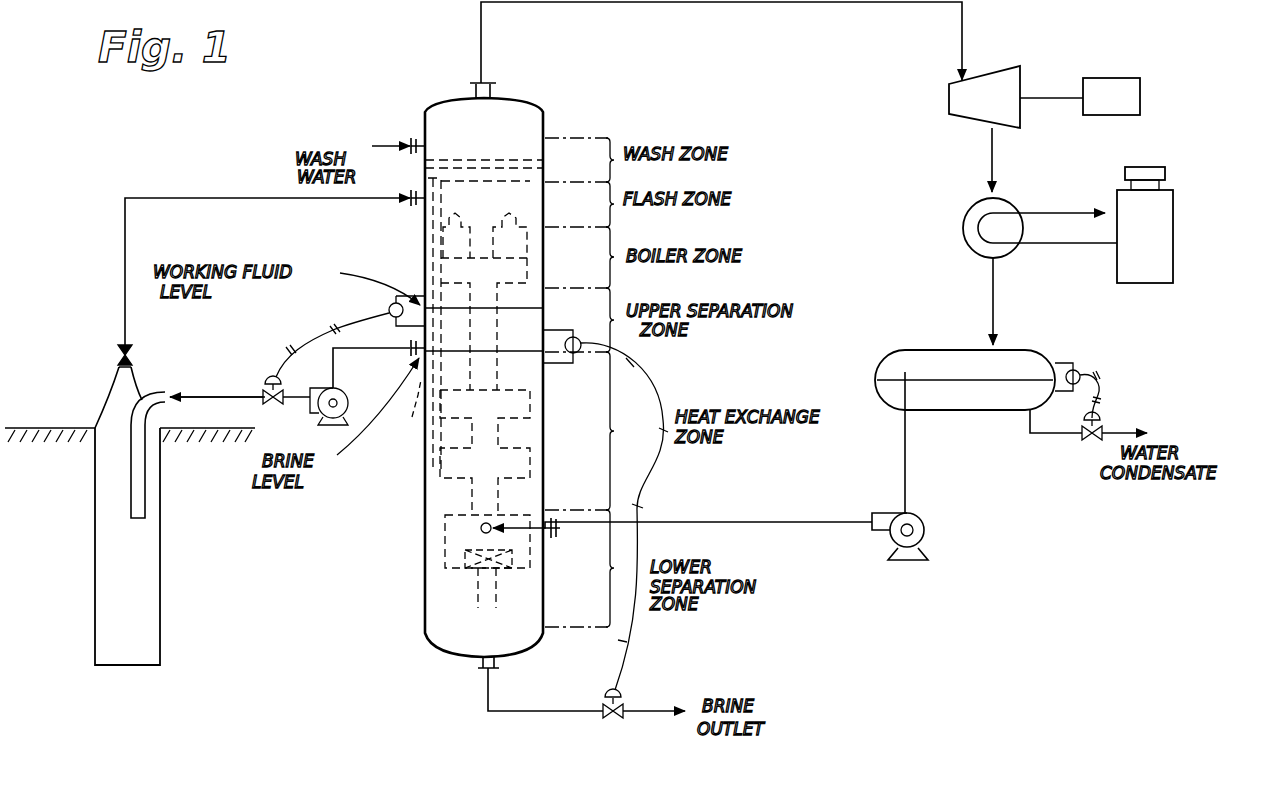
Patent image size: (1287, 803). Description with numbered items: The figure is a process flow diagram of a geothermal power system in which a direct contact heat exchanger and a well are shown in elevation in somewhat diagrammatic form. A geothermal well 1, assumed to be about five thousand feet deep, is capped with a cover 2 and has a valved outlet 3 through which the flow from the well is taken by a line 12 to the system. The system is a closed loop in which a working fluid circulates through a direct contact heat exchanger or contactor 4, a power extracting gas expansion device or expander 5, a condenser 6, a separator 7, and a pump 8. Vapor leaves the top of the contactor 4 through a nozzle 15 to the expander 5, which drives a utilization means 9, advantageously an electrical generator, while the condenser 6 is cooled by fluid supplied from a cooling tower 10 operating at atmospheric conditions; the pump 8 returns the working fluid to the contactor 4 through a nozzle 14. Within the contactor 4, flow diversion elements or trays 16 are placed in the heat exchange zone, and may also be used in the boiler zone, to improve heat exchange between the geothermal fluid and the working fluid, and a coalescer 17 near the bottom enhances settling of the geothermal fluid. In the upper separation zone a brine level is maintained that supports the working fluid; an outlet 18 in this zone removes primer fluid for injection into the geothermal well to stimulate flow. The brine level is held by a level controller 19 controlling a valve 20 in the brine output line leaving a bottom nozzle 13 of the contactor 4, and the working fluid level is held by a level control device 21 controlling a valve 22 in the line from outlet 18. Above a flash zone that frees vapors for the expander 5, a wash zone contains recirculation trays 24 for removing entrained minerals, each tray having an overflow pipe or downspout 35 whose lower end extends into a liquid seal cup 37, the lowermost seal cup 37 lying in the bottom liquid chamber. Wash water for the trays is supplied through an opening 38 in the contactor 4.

The geothermal well 1 is at (150, 573).
The cover 2 is at (108, 398).
The valved outlet 3 is at (133, 355).
The direct contact heat exchanger (contactor) 4 is at (544, 110).
The power extracting gas expansion device (expander) 5 is at (985, 75).
The condenser 6 is at (964, 222).
The separator 7 is at (932, 350).
The pump 8 is at (925, 530).
The utilization means 9 is at (1095, 78).
The cooling tower 10 is at (1174, 232).
The brine inlet line 12 is at (414, 208).
The bottom brine outlet nozzle 13 is at (472, 665).
The working fluid inlet nozzle 14 is at (550, 540).
The vapor outlet nozzle 15 is at (487, 84).
The flow diversion elements (trays) 16 is at (425, 275).
The coalescer 17 is at (445, 565).
The outlet 18 is at (412, 360).
The level controller 19 is at (576, 337).
The valve 20 is at (612, 720).
The level control device 21 is at (389, 310).
The valve 22 is at (335, 387).
The recirculation trays 24 is at (544, 164).
The overflow pipe (downspout) 35 is at (445, 205).
The liquid seal cup 37 is at (410, 418).
The opening 38 is at (410, 142).